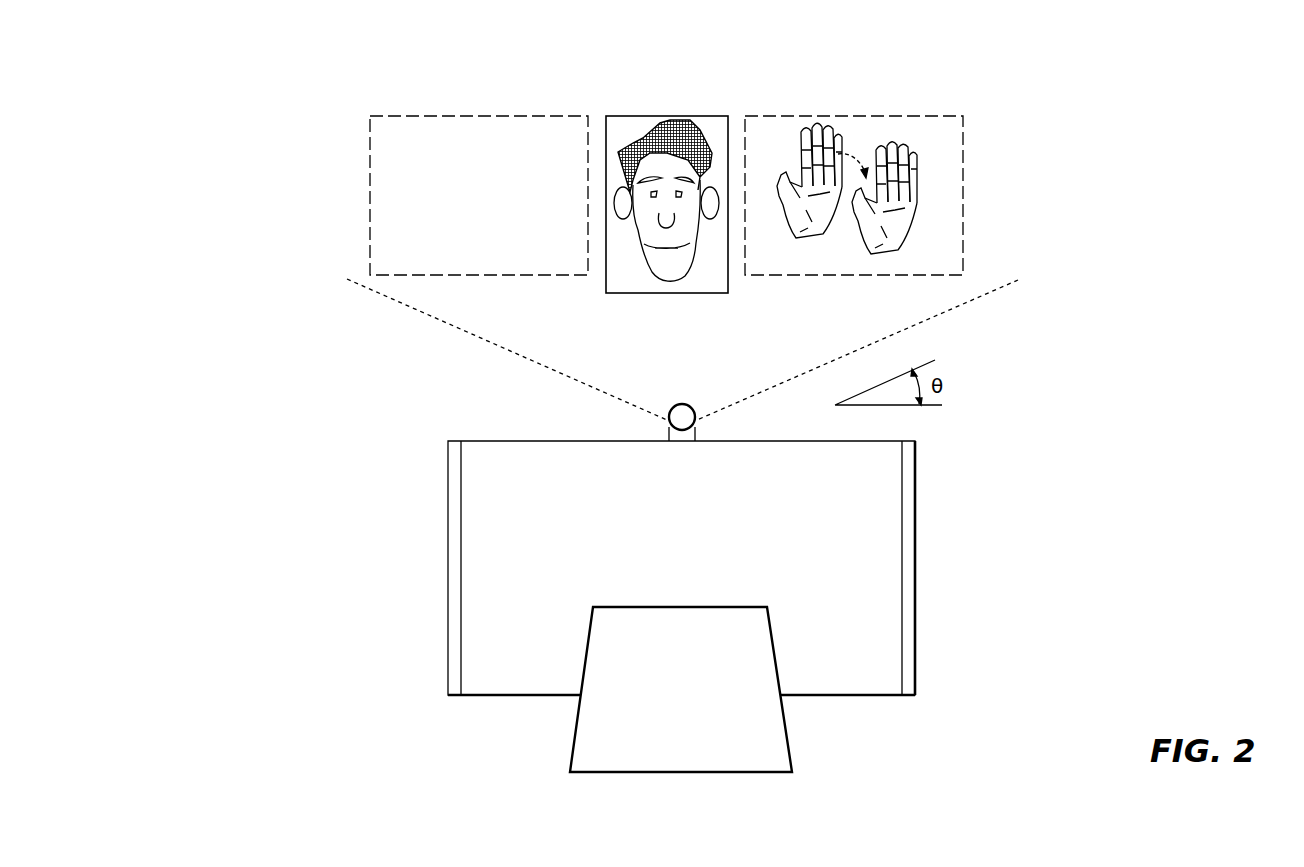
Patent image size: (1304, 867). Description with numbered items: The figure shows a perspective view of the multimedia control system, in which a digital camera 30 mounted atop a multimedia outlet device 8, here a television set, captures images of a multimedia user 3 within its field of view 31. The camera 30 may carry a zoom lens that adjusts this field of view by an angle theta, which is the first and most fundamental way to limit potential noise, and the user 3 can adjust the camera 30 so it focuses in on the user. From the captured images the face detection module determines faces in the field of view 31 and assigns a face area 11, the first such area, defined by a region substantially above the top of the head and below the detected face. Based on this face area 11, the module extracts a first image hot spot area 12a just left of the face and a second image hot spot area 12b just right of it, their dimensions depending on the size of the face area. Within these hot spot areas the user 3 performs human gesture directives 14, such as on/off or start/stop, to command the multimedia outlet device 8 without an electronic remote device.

The first image hot spot area 12a is at (370, 173).
The second image hot spot area 12b is at (963, 159).
The face area 11 is at (617, 117).
The multimedia user 3 is at (668, 123).
The human gesture directives 14 is at (903, 217).
The digital camera 30 is at (557, 370).
The field of view 31 is at (938, 315).
The multimedia outlet device 8 is at (447, 530).